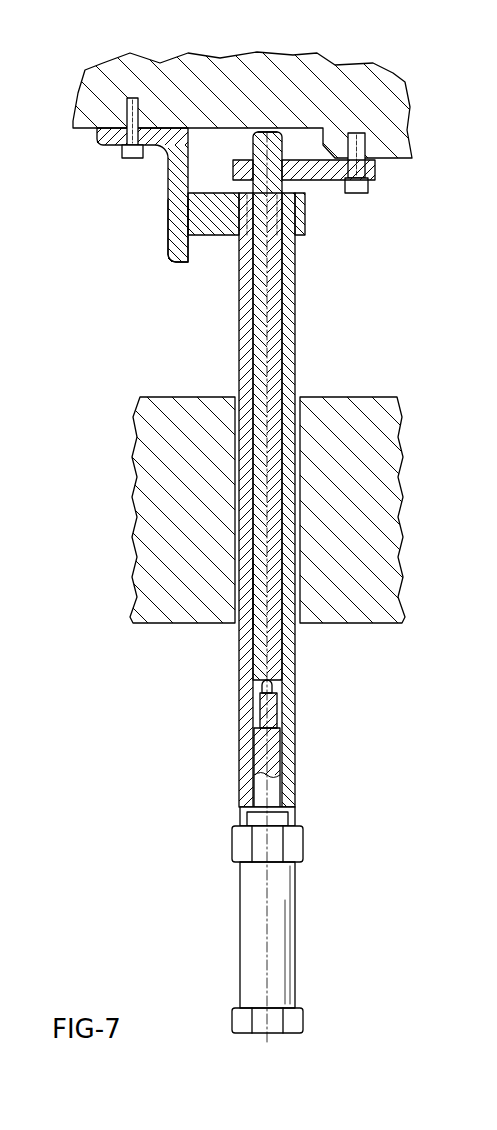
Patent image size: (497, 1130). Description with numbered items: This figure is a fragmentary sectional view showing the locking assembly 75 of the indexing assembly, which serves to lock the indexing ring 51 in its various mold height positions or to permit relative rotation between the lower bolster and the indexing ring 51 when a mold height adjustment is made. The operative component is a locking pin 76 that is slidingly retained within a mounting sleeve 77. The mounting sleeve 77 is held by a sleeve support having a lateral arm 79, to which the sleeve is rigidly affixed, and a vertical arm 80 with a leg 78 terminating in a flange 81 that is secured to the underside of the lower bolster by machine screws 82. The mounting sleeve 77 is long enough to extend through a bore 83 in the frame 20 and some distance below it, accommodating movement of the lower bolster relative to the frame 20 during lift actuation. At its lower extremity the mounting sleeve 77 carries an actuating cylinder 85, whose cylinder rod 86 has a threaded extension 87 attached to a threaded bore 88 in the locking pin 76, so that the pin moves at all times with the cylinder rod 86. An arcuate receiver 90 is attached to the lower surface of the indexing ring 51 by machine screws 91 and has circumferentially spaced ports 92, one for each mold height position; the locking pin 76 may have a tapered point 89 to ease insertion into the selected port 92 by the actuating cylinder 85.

The frame 20 is at (195, 531).
The indexing ring 51 is at (388, 148).
The locking assembly 75 is at (318, 248).
The locking pin 76 is at (258, 322).
The mounting sleeve 77 is at (287, 347).
The bracket leg 78 is at (173, 243).
The lateral arm 79 is at (212, 228).
The bracket 80 is at (180, 170).
The flange 81 is at (97, 130).
The machine screws 82 is at (127, 160).
The bore 83 is at (237, 568).
The actuating cylinder 85 is at (257, 913).
The cylinder rod 86 is at (260, 787).
The threaded extension 87 is at (267, 717).
The threaded bore 88 is at (267, 693).
The tapered point 89 is at (275, 137).
The arcuate receiver 90 is at (313, 177).
The machine screws 91 is at (363, 188).
The ports 92 is at (255, 172).